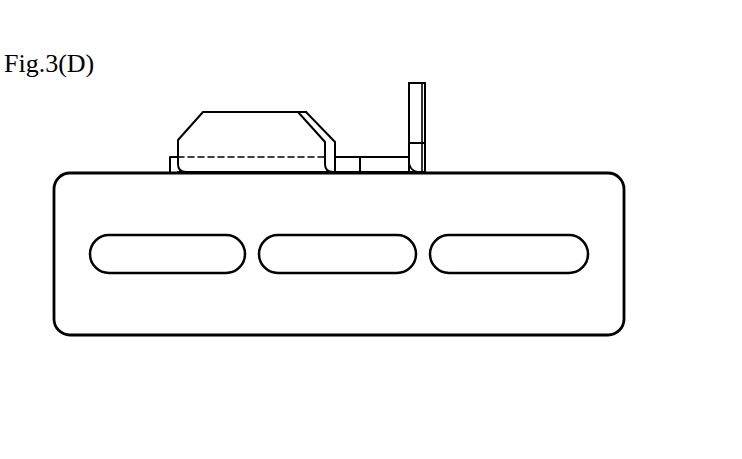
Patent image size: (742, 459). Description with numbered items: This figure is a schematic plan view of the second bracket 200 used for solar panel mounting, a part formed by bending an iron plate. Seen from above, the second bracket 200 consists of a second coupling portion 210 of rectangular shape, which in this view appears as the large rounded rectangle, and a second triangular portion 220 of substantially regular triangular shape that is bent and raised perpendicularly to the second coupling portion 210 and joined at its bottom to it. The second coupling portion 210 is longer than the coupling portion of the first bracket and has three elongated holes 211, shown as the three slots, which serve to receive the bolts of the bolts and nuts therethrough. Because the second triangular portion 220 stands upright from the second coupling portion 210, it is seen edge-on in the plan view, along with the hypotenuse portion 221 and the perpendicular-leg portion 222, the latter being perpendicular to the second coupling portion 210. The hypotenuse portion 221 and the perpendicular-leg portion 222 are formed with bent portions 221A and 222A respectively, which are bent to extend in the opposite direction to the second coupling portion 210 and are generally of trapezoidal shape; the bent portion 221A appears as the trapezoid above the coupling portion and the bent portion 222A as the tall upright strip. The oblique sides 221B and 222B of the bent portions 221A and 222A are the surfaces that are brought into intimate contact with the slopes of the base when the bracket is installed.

The second bracket 200 is at (648, 163).
The second coupling portion 210 is at (608, 292).
The elongated holes 211 is at (168, 273).
The second triangular portion 220 is at (372, 157).
The hypotenuse portion 221 is at (170, 165).
The bent portion 221A is at (253, 132).
The oblique side 221B is at (315, 127).
The perpendicular-leg portion 222 is at (418, 165).
The bent portion 222A is at (425, 100).
The oblique side 222B is at (415, 122).